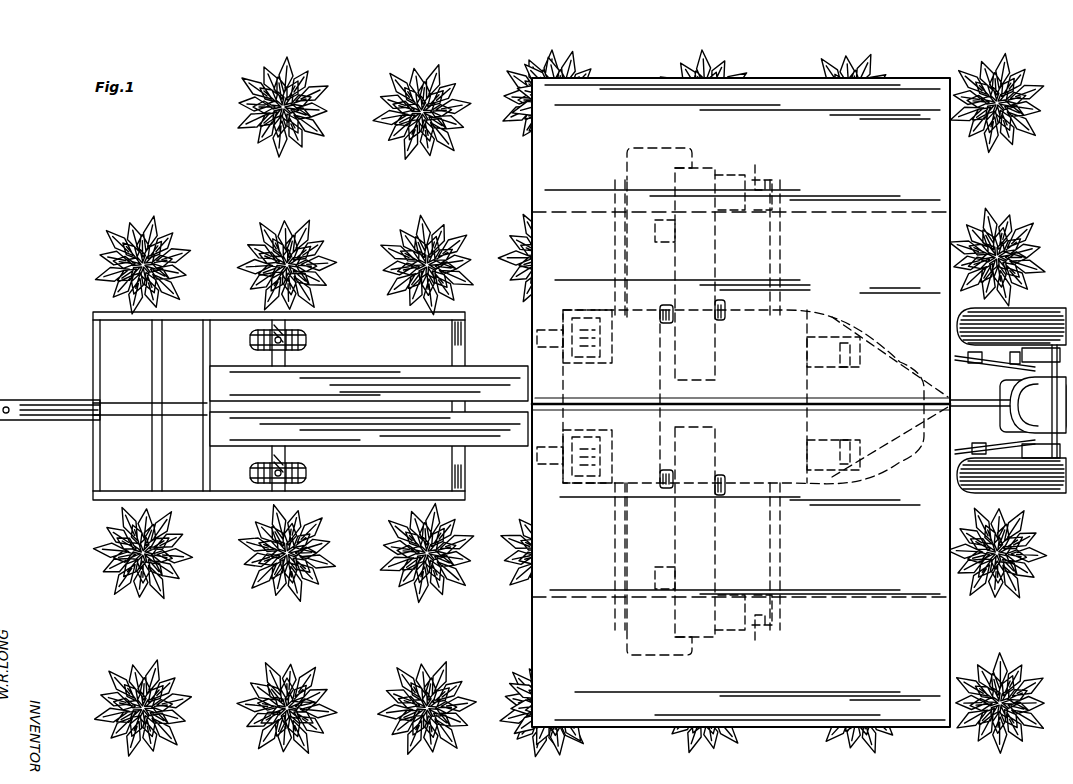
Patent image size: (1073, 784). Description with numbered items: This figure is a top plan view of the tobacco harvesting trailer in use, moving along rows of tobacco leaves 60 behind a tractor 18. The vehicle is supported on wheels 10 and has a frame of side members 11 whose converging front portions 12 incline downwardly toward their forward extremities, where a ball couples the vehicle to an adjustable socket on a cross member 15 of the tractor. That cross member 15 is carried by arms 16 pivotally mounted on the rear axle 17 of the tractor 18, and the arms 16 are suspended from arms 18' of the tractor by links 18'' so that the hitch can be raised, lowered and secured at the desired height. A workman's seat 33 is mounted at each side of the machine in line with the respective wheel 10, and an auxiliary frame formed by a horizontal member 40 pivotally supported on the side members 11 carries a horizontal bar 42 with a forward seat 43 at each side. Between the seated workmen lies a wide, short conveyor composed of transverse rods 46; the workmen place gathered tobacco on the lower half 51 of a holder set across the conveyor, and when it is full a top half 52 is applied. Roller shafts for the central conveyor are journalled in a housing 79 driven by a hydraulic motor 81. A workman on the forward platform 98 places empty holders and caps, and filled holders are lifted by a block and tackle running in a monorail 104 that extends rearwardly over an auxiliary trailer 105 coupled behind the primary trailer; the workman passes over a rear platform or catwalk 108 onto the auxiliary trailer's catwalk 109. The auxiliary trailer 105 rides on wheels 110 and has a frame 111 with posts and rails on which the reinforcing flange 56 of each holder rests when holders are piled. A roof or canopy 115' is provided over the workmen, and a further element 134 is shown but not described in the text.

The wheels 10 is at (550, 340).
The side members 11 is at (750, 314).
The converging front portions 12 is at (886, 356).
The cross member 15 is at (1008, 392).
The arms 16 is at (1005, 370).
The rear axle 17 is at (1020, 458).
The tractor 18 is at (1011, 313).
The arms of the tractor 18' is at (1005, 353).
The links 18'' is at (965, 408).
The workman's seat 33 is at (632, 355).
The horizontal member 40 is at (613, 243).
The horizontal bar 42 is at (740, 180).
The seat 43 is at (668, 135).
The transverse rods 46 is at (668, 392).
The lower half of holder 51 is at (210, 385).
The top half of holder 52 is at (100, 374).
The reinforcing flange 56 is at (190, 318).
The tobacco leaves 60 is at (300, 150).
The housing 79 is at (703, 248).
The hydraulic motor 81 is at (668, 240).
The forward platform 98 is at (878, 447).
The monorail 104 is at (385, 400).
The auxiliary trailer 105 is at (363, 305).
The rear platform or catwalk 108 is at (535, 385).
The platform or catwalk 109 is at (468, 442).
The wheels 110 is at (306, 342).
The frame 111 is at (395, 490).
The roof or canopy 115' is at (741, 402).
The axle bracket 134 is at (330, 325).